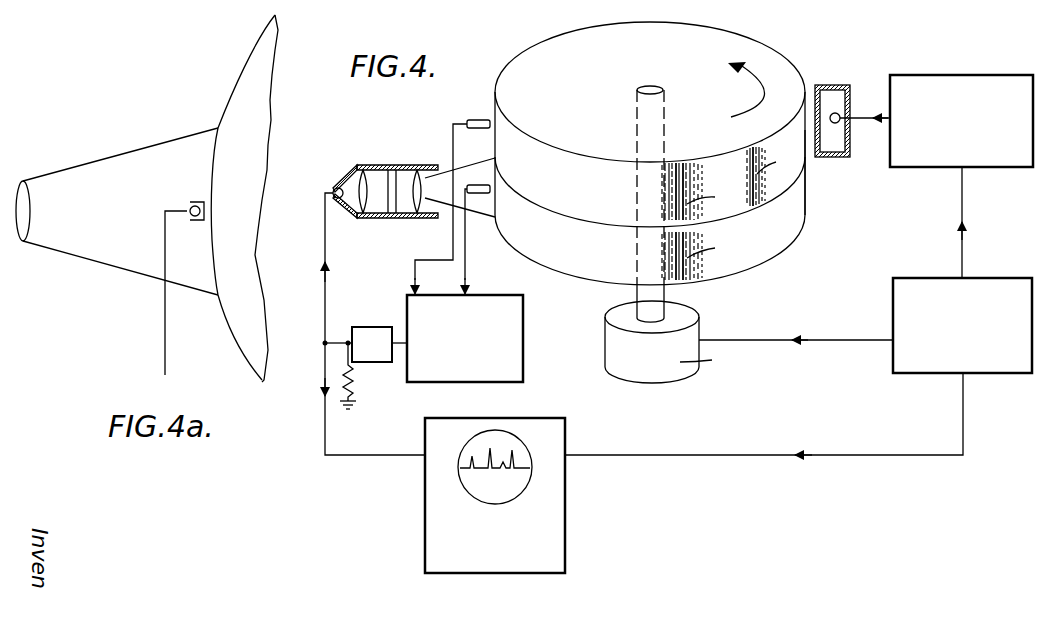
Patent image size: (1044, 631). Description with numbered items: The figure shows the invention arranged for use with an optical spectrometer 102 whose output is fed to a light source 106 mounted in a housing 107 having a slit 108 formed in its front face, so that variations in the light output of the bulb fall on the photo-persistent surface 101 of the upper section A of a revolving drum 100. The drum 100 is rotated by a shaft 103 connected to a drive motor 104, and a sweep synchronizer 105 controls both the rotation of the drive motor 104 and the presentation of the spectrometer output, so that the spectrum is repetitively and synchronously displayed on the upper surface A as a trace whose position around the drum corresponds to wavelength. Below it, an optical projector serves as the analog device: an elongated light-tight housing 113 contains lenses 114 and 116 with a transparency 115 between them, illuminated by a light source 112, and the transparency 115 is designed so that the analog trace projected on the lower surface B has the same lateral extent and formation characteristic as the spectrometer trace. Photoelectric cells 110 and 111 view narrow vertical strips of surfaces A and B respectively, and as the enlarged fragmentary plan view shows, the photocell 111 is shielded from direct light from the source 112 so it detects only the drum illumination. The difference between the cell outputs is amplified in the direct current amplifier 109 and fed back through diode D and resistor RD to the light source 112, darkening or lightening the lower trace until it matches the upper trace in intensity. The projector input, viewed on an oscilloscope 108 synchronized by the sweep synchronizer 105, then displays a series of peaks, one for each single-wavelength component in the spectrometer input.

In FIG. 4, the revolving drum 100 is at (778, 265).
In FIG. 4, the photo-persistent surface 101 is at (790, 218).
In FIG. 4a, the photo-persistent surface 101 is at (248, 355).
In FIG. 4, the optical spectrometer 102 is at (958, 72).
In FIG. 4, the shaft 103 is at (656, 302).
In FIG. 4, the drive motor 104 is at (682, 342).
In FIG. 4, the sweep synchronizer 105 is at (950, 376).
In FIG. 4, the light source 106 is at (836, 124).
In FIG. 4, the housing 107 is at (848, 90).
In FIG. 4, the slit 108 is at (570, 508).
In FIG. 4, the direct current amplifier 109 is at (530, 375).
In FIG. 4, the photoelectric cell 110 is at (480, 120).
In FIG. 4, the photoelectric cell 111 is at (475, 183).
In FIG. 4a, the photoelectric cell 111 is at (194, 205).
In FIG. 4, the light source 112 is at (337, 188).
In FIG. 4, the light-tight housing 113 is at (388, 165).
In FIG. 4, the lens 114 is at (363, 203).
In FIG. 4, the transparency 115 is at (384, 218).
In FIG. 4, the lens 116 is at (418, 208).
In FIG. 4a, the lens 116 is at (30, 217).